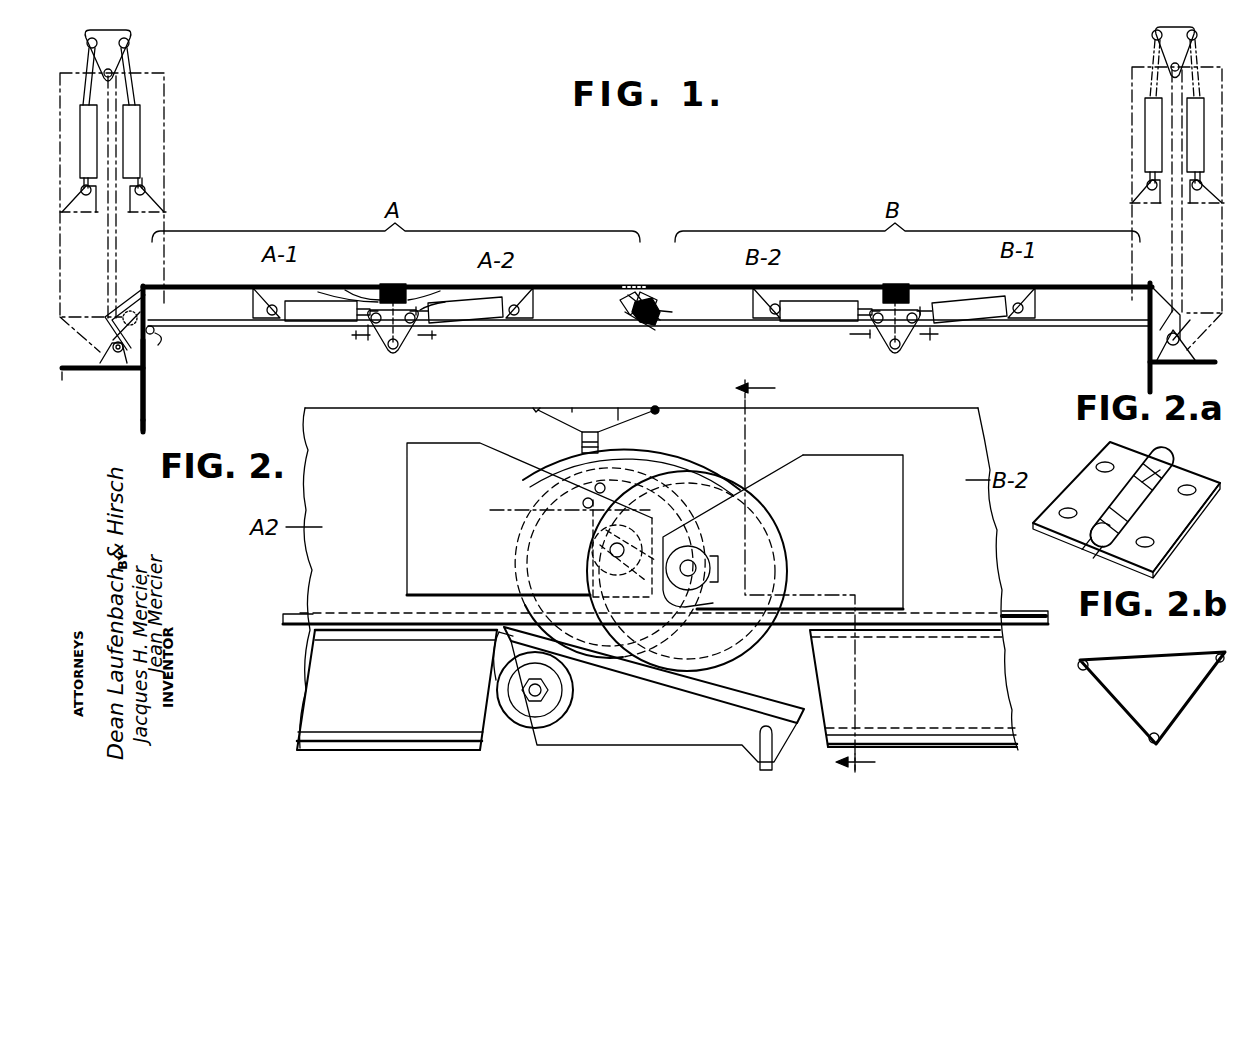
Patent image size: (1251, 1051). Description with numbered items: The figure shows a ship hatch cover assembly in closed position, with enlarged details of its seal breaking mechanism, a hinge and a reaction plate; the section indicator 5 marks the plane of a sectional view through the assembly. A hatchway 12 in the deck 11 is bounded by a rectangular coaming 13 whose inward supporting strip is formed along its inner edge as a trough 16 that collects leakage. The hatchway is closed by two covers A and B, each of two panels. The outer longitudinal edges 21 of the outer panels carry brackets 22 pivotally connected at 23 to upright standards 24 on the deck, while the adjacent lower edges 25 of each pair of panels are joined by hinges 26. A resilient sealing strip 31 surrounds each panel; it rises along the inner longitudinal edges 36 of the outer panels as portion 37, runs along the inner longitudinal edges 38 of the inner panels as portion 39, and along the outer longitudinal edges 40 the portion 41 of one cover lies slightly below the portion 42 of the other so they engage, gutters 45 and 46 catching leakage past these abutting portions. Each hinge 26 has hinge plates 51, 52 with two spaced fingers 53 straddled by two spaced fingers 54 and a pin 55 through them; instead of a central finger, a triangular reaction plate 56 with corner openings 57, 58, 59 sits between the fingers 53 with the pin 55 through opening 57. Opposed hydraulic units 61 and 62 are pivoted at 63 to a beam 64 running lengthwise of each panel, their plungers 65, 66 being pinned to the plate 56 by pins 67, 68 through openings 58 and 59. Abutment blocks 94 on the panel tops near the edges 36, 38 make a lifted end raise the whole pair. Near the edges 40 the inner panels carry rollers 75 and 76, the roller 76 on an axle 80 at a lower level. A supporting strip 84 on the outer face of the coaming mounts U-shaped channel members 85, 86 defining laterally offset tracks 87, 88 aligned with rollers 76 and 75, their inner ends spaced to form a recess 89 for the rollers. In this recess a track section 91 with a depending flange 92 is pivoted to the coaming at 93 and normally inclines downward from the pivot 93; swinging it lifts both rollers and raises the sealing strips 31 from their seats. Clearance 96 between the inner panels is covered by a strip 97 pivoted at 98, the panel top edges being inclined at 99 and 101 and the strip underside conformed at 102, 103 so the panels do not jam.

In FIG. 1, the deck 11 is at (72, 372).
In FIG. 1, the hatchway 12 is at (200, 400).
In FIG. 1, the coaming 13 is at (150, 355).
In FIG. 1, the trough 16 is at (162, 340).
In FIG. 1, the outer longitudinal edges 21 is at (150, 320).
In FIG. 1, the brackets 22 is at (112, 322).
In FIG. 1, the pivotal connection 23 is at (116, 355).
In FIG. 1, the upright standard 24 is at (85, 375).
In FIG. 1, the adjacent lower edges 25 is at (358, 336).
In FIG. 1, the hinges 26 is at (371, 350).
In FIG. 2A, the hinges 26 is at (1180, 454).
In FIG. 1, the sealing strip 31 is at (205, 328).
In FIG. 1, the inner longitudinal edges 36 is at (388, 285).
In FIG. 1, the sealing strip portion 37 is at (360, 292).
In FIG. 1, the inner longitudinal edges 38 is at (402, 285).
In FIG. 1, the sealing strip portion 39 is at (428, 294).
In FIG. 2, the outer longitudinal edges 40 is at (582, 450).
In FIG. 1, the sealing strip portion 41 is at (638, 320).
In FIG. 2, the sealing strip portion 41 is at (566, 540).
In FIG. 1, the sealing strip portion 42 is at (652, 300).
In FIG. 2, the sealing strip portion 42 is at (670, 472).
In FIG. 1, the gutter 45 is at (330, 295).
In FIG. 1, the gutter 46 is at (665, 312).
In FIG. 2A, the hinge plate 51 is at (1042, 508).
In FIG. 2A, the hinge plate 52 is at (1175, 520).
In FIG. 2A, the spaced fingers 53 is at (1165, 472).
In FIG. 2A, the spaced fingers 54 is at (1098, 452).
In FIG. 1, the pin 55 is at (393, 350).
In FIG. 1, the reaction plate 56 is at (425, 312).
In FIG. 2B, the reaction plate 56 is at (1165, 715).
In FIG. 2B, the opening 57 is at (1147, 740).
In FIG. 2B, the opening 58 is at (1220, 655).
In FIG. 2B, the opening 59 is at (1082, 672).
In FIG. 1, the hydraulic unit 61 is at (310, 322).
In FIG. 1, the hydraulic unit 62 is at (478, 322).
In FIG. 1, the pivotal mount 63 is at (268, 318).
In FIG. 1, the beam 64 is at (250, 298).
In FIG. 1, the plunger 65 is at (995, 305).
In FIG. 1, the plunger 66 is at (862, 330).
In FIG. 1, the pin 67 is at (918, 330).
In FIG. 1, the pin 68 is at (878, 330).
In FIG. 2, the roller 75 is at (555, 478).
In FIG. 2, the roller 76 is at (783, 529).
In FIG. 2, the axle 80 is at (695, 558).
In FIG. 2, the supporting strip 84 is at (297, 750).
In FIG. 2, the channel member 85 is at (1003, 683).
In FIG. 2, the channel member 86 is at (308, 683).
In FIG. 2, the track 87 is at (1005, 636).
In FIG. 2, the track 88 is at (440, 640).
In FIG. 2, the recess 89 is at (790, 690).
In FIG. 2, the track section 91 is at (737, 674).
In FIG. 2, the depending flange 92 is at (648, 718).
In FIG. 2, the pivotal mount 93 is at (545, 690).
In FIG. 1, the abutment blocks 94 is at (394, 284).
In FIG. 2, the clearance space 96 is at (598, 437).
In FIG. 1, the strip 97 is at (635, 288).
In FIG. 2, the strip 97 is at (578, 412).
In FIG. 2, the pivot 98 is at (657, 408).
In FIG. 2, the inclined edge 99 is at (568, 430).
In FIG. 2, the inclined edge 101 is at (637, 422).
In FIG. 2, the conformed undersurface 102 is at (560, 412).
In FIG. 2, the conformed undersurface 103 is at (621, 423).
In FIG. 2, the section line 5 is at (815, 576).